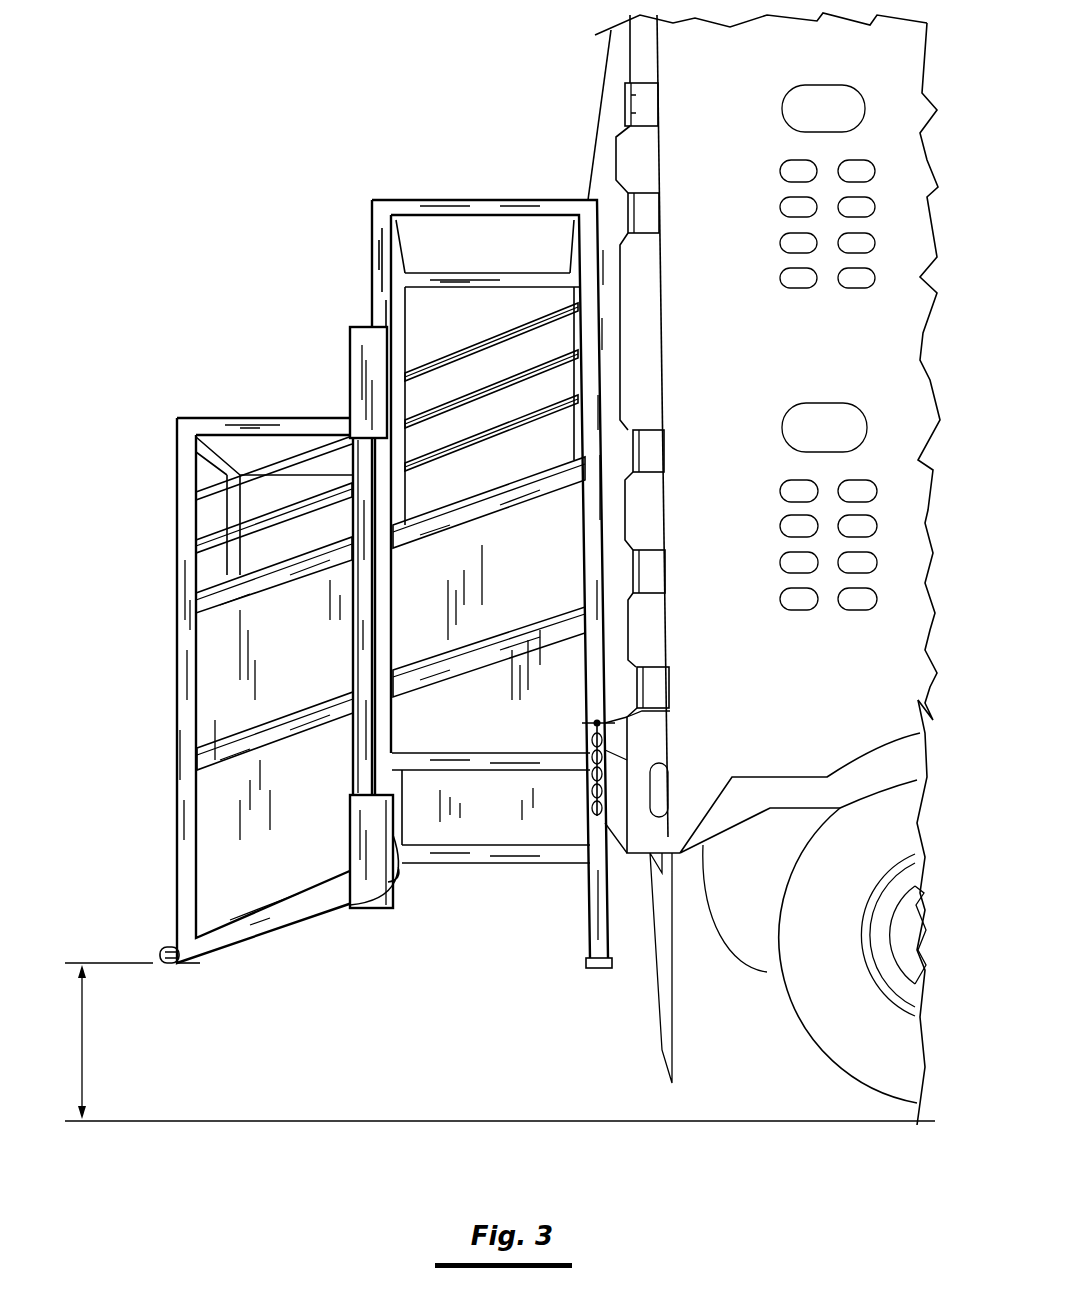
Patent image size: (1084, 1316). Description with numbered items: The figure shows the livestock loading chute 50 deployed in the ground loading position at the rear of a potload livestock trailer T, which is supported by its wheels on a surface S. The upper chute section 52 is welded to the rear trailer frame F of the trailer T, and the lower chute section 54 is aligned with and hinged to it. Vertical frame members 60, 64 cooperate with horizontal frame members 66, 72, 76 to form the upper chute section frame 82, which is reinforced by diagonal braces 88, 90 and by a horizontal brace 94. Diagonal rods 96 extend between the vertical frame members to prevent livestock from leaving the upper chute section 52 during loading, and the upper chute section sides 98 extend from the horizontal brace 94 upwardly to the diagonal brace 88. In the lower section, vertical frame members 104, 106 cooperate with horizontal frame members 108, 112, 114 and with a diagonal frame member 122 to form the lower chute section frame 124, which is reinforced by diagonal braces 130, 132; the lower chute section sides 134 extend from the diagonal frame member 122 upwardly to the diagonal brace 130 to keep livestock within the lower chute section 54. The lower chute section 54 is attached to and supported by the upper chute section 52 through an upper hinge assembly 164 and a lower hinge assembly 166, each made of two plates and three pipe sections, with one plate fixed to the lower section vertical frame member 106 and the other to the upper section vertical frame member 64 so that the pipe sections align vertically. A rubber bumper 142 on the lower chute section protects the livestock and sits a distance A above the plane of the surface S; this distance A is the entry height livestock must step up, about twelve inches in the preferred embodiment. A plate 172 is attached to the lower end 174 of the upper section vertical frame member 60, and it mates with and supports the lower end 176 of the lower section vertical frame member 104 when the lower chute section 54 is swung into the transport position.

The livestock loading chute 50 is at (272, 218).
The upper chute section 52 is at (436, 190).
The lower chute section 54 is at (157, 430).
The vertical frame member 60 is at (597, 333).
The vertical frame member 64 is at (392, 598).
The horizontal frame member 66 is at (492, 272).
The horizontal frame member 72 is at (493, 217).
The horizontal frame member 76 is at (500, 775).
The upper chute section frame 82 is at (368, 250).
The diagonal brace 88 is at (500, 505).
The diagonal brace 90 is at (482, 680).
The horizontal brace 94 is at (530, 865).
The diagonal rods 96 is at (492, 368).
The upper chute section sides 98 is at (532, 590).
The vertical frame member 104 is at (177, 693).
The vertical frame member 106 is at (357, 608).
The horizontal frame member 108 is at (302, 483).
The horizontal frame member 112 is at (253, 415).
The horizontal frame member 114 is at (196, 480).
The diagonal frame member 122 is at (280, 918).
The lower chute section frame 124 is at (163, 760).
The diagonal brace 130 is at (308, 575).
The diagonal brace 132 is at (290, 738).
The lower chute section sides 134 is at (322, 690).
The rubber bumper 142 is at (165, 945).
The upper hinge assembly 164 is at (345, 343).
The lower hinge assembly 166 is at (345, 828).
The plate 172 is at (585, 918).
The lower end 174 is at (595, 972).
The lower end 176 is at (182, 968).
The livestock trailer T is at (622, 70).
The rear trailer frame F is at (597, 185).
The surface S is at (400, 1118).
The entry height A is at (109, 1041).